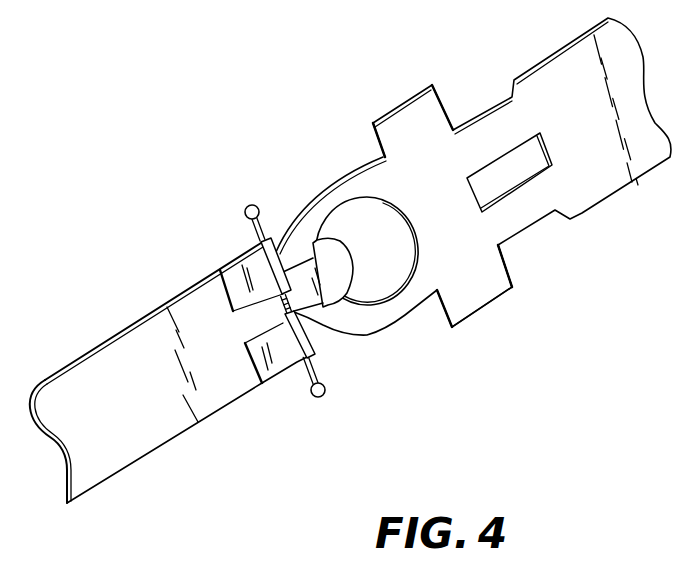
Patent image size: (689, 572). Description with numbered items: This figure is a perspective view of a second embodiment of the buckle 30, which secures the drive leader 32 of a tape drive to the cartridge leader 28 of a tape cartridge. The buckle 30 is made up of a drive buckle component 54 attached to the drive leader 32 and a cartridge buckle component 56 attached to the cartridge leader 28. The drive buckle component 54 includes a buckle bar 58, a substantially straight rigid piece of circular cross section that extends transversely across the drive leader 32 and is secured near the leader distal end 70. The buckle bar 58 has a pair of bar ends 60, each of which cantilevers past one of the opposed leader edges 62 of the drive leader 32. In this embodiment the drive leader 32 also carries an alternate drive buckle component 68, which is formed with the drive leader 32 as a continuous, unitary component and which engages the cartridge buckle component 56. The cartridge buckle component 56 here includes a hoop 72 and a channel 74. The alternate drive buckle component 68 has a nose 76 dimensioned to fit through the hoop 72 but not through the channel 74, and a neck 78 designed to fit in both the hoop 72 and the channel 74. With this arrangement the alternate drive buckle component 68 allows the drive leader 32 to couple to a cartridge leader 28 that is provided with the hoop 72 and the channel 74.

The cartridge leader 28 is at (378, 157).
The buckle 30 is at (312, 63).
The drive leader 32 is at (133, 316).
The drive buckle component 54 is at (243, 197).
The cartridge buckle component 56 is at (357, 198).
The buckle bar 58 is at (254, 241).
The bar ends 60 is at (245, 212).
The leader edges 62 is at (78, 357).
The alternate drive buckle component 68 is at (325, 258).
The leader distal end 70 is at (306, 316).
The hoop 72 is at (483, 305).
The channel 74 is at (330, 302).
The nose 76 is at (340, 283).
The neck 78 is at (305, 298).